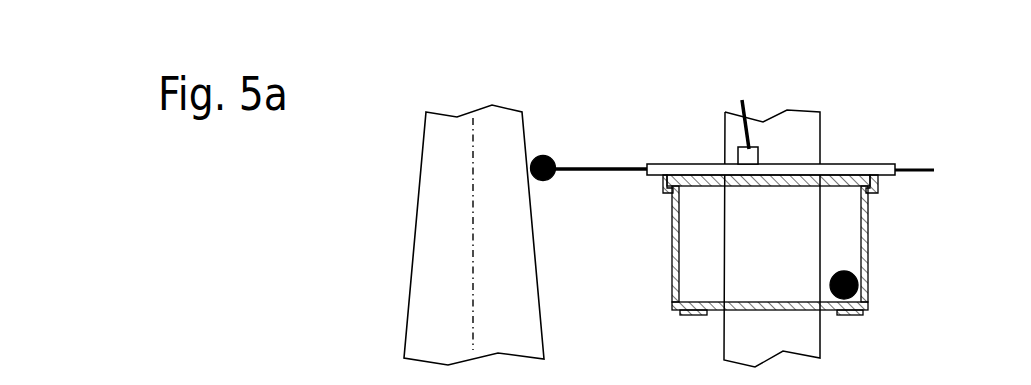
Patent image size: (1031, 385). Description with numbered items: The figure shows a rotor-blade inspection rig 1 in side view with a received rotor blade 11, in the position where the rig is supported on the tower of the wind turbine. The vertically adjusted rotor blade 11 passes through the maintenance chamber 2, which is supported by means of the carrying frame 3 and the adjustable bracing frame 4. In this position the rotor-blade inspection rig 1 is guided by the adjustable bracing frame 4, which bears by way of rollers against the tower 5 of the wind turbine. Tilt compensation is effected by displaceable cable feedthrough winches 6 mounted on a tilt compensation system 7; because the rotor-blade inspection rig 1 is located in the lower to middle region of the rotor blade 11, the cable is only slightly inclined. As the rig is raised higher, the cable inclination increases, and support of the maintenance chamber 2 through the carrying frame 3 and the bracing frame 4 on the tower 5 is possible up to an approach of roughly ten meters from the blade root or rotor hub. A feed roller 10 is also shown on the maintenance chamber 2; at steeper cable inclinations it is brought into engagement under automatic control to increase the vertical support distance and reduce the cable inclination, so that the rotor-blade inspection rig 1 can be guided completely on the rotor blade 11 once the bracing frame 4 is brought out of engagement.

The rotor-blade inspection rig 1 is at (967, 86).
The maintenance chamber 2 is at (868, 237).
The carrying frame 3 is at (673, 170).
The adjustable bracing frame 4 is at (612, 165).
The tower 5 is at (430, 293).
The cable feedthrough winches 6 is at (753, 155).
The tilt compensation system 7 is at (753, 155).
The feed roller 10 is at (862, 293).
The rotor blade 11 is at (728, 343).